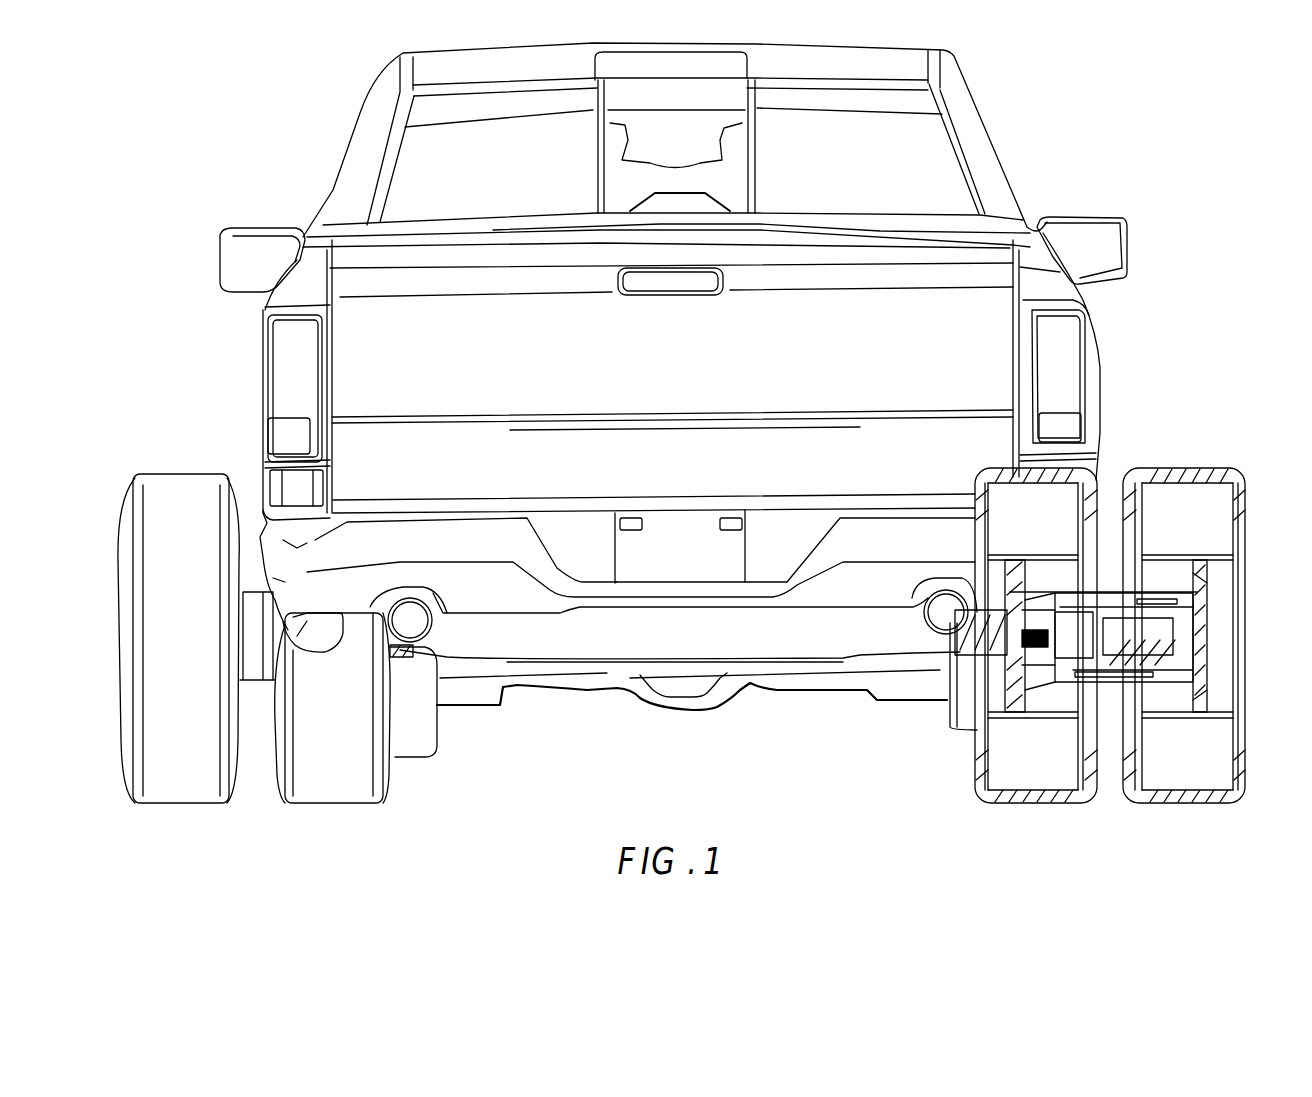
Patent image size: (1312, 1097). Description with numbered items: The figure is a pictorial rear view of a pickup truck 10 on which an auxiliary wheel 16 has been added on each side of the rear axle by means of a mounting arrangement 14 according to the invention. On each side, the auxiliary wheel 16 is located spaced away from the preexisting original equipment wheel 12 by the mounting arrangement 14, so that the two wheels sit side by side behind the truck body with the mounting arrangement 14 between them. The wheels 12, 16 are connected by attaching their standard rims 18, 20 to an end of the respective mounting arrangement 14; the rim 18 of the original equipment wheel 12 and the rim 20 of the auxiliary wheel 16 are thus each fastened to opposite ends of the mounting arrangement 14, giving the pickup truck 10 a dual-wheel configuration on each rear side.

The pickup truck 10 is at (1020, 160).
The preexisting original equipment wheel 12 is at (368, 788).
The mounting arrangement 14 is at (257, 682).
The auxiliary wheel 16 is at (175, 482).
The standard rim 18 is at (1220, 560).
The standard rim 20 is at (1097, 557).